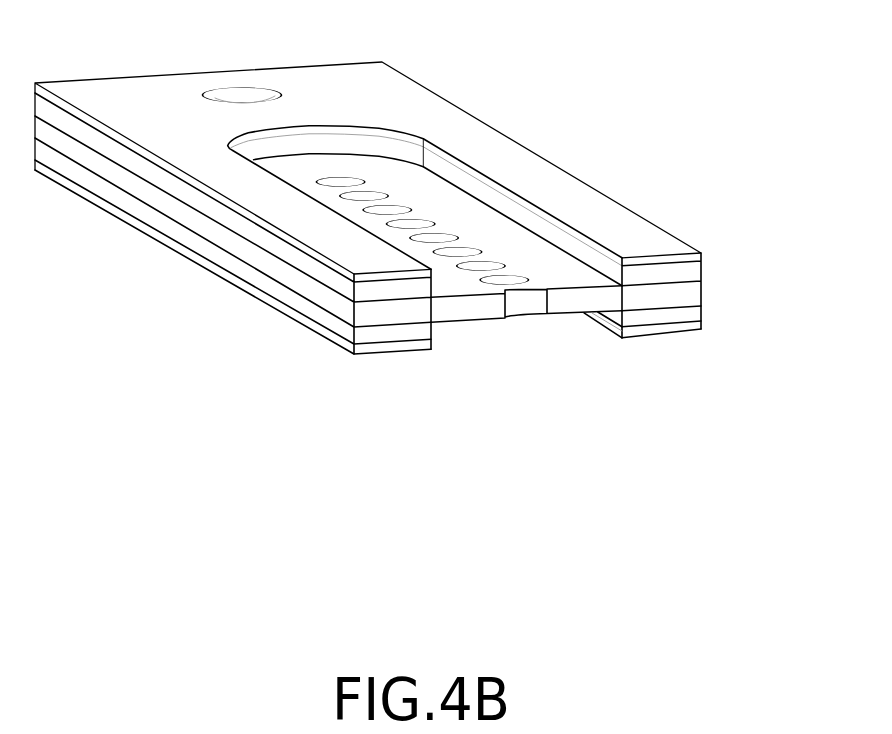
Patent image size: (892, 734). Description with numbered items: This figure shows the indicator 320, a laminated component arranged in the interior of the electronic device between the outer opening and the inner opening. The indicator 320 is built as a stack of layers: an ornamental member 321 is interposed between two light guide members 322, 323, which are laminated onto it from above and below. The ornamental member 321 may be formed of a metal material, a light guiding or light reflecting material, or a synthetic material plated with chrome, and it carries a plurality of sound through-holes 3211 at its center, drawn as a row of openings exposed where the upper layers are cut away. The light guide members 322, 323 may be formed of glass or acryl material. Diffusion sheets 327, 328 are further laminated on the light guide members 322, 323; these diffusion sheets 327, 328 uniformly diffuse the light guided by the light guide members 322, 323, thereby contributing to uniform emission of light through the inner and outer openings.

The indicator 320 is at (580, 114).
The diffusion sheet 327 is at (626, 218).
The light guide member 322 is at (690, 271).
The ornamental member 321 is at (690, 295).
The sound through-holes 3211 is at (507, 281).
The light guide member 323 is at (690, 320).
The diffusion sheet 328 is at (690, 329).